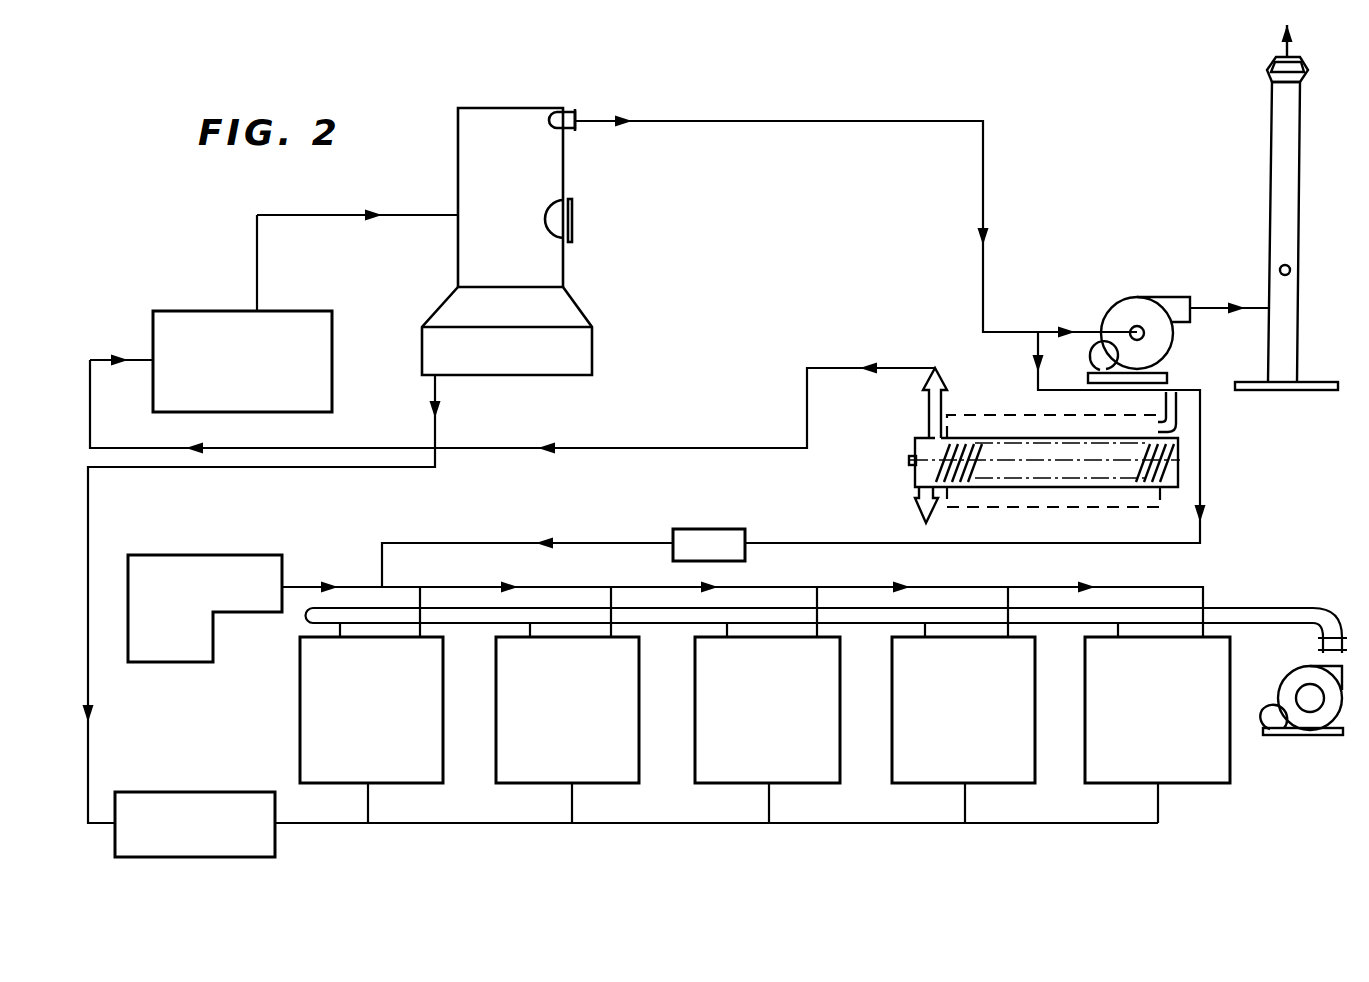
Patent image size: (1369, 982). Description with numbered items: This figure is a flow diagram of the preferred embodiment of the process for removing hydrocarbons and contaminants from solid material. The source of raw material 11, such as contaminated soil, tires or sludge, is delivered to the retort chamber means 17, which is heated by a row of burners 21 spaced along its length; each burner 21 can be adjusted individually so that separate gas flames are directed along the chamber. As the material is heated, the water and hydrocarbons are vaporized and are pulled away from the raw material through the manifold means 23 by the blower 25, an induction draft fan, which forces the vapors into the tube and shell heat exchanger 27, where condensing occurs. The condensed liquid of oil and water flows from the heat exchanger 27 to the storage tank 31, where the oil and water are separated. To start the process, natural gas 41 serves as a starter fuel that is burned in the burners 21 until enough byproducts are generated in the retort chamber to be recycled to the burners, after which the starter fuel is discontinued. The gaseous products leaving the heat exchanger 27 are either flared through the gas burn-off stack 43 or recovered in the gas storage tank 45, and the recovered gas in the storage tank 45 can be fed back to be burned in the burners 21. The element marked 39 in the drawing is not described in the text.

The source of raw material 11 is at (1185, 460).
The retort chamber means 17 is at (1165, 505).
The burners 21 is at (765, 710).
The manifold means 23 is at (285, 318).
The blower 25 is at (1292, 684).
The tube and shell heat exchanger 27 is at (512, 112).
The storage tank 31 is at (195, 824).
The nozzle 39 is at (920, 533).
The natural gas 41 is at (205, 608).
The gas burn-off stack 43 is at (1274, 188).
The gas storage tank 45 is at (688, 535).